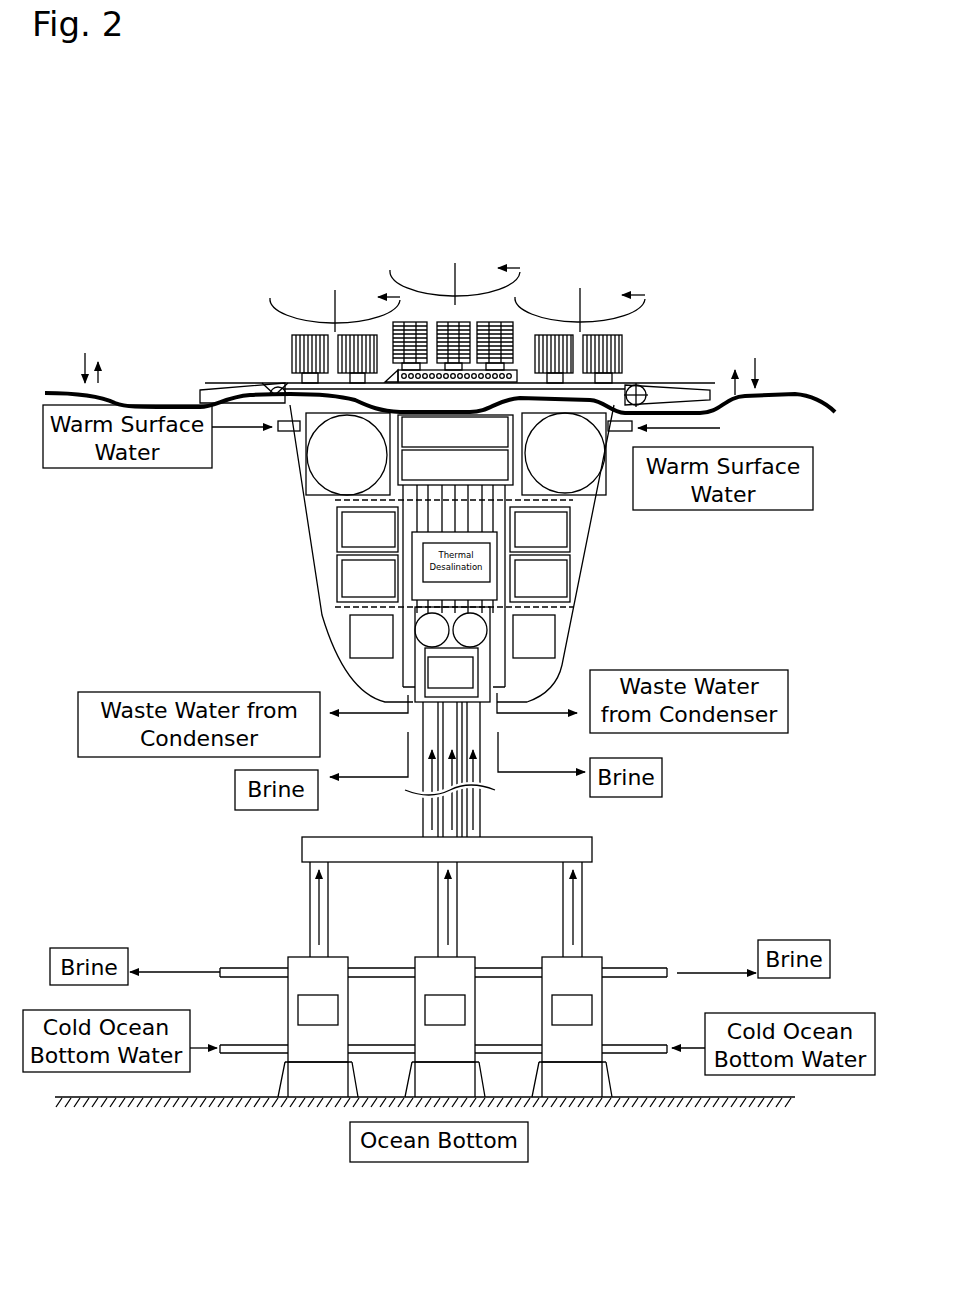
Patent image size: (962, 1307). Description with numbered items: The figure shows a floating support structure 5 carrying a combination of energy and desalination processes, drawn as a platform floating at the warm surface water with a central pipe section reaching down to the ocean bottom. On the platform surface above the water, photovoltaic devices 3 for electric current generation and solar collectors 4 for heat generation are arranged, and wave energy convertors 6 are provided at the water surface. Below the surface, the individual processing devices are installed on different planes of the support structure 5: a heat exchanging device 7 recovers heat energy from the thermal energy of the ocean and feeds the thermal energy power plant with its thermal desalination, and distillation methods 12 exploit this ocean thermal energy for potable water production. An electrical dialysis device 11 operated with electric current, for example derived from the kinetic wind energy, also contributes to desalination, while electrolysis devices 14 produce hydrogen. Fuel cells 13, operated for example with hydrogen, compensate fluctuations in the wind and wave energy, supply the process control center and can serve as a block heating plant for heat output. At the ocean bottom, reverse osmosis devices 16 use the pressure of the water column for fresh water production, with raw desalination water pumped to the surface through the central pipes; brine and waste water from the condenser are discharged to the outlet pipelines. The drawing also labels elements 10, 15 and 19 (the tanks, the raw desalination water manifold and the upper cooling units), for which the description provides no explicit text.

The photovoltaic devices 3 is at (363, 300).
The solar collectors 4 is at (290, 338).
The support structure 5 is at (283, 413).
The wave energy convertors 6 is at (200, 393).
The heat exchanging device 7 is at (413, 427).
The fresh water tank 10 is at (347, 485).
The electrical dialysis device 11 is at (337, 577).
The distillation methods 12 is at (337, 598).
The fuel cells 13 is at (348, 633).
The electrolysis devices 14 is at (420, 681).
The raw desalination water tank 15 is at (318, 855).
The reverse osmosis device 16 is at (307, 967).
The cooling grid blocks 19 is at (512, 382).